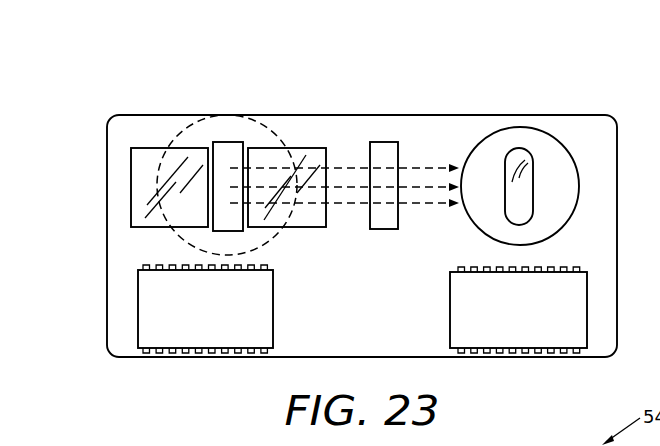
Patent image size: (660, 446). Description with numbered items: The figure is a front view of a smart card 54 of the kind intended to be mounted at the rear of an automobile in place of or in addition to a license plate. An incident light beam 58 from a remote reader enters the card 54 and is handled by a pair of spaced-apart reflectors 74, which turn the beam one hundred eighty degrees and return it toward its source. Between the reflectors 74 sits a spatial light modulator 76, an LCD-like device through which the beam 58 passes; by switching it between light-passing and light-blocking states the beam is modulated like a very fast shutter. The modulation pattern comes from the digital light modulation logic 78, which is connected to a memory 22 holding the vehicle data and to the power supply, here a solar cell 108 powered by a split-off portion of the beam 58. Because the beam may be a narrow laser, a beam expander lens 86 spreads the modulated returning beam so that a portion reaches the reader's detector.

The memory 22 is at (189, 320).
The card 54 is at (621, 341).
The light beam 58 is at (346, 168).
The reflector 74 is at (230, 141).
The spatial light modulator 76 is at (388, 230).
The digital light modulation logic 78 is at (504, 318).
The beam expander lens 86 is at (518, 153).
The solar cell 108 is at (153, 147).